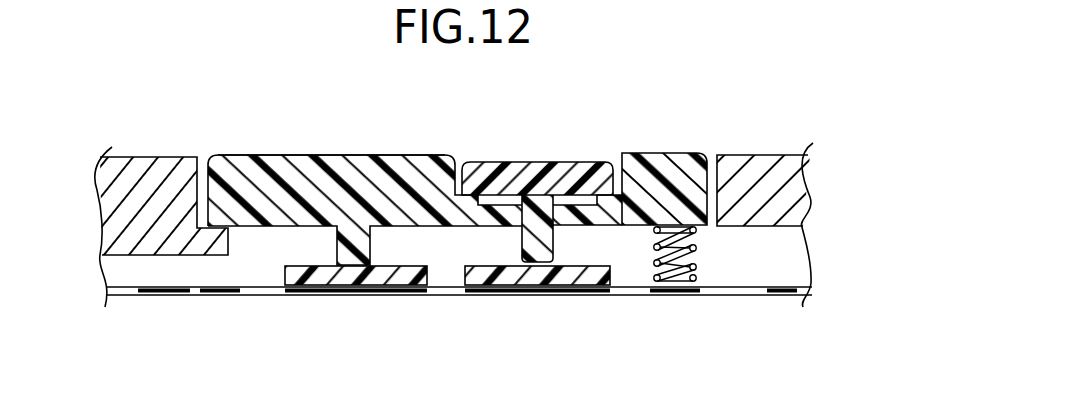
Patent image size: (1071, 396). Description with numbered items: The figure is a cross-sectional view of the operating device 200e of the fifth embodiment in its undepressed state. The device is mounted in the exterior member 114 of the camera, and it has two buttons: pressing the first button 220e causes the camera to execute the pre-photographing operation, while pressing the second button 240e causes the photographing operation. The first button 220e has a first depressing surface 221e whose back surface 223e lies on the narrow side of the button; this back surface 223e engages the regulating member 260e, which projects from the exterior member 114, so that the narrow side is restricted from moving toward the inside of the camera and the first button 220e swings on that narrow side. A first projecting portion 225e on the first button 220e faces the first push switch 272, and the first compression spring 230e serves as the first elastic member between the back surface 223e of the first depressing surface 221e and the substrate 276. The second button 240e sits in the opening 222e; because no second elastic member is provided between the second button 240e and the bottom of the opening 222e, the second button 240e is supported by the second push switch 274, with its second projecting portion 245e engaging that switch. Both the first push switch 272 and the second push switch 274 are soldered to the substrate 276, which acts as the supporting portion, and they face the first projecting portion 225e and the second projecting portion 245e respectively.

The exterior member 114 is at (145, 173).
The operating device 200e is at (686, 121).
The first button 220e is at (266, 147).
The first depressing surface 221e is at (340, 154).
The opening 222e is at (621, 152).
The back surface 223e is at (253, 229).
The first projecting portion 225e is at (372, 268).
The second button 240e is at (494, 150).
The second projecting portion 245e is at (516, 264).
The first compression spring 230e is at (676, 278).
The regulating member 260e is at (201, 245).
The first push switch 272 is at (305, 272).
The second push switch 274 is at (568, 276).
The substrate 276 is at (766, 296).